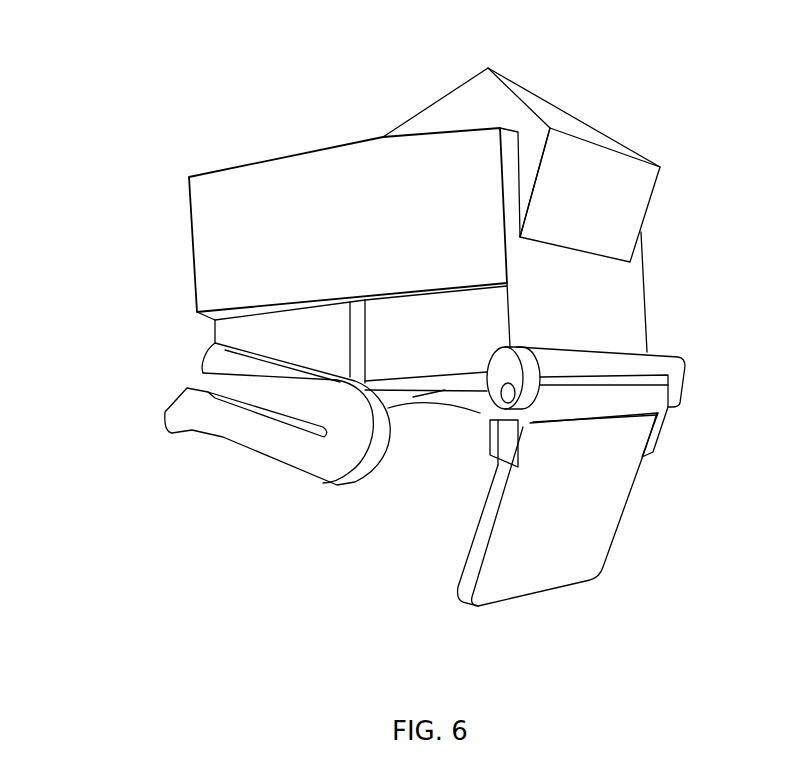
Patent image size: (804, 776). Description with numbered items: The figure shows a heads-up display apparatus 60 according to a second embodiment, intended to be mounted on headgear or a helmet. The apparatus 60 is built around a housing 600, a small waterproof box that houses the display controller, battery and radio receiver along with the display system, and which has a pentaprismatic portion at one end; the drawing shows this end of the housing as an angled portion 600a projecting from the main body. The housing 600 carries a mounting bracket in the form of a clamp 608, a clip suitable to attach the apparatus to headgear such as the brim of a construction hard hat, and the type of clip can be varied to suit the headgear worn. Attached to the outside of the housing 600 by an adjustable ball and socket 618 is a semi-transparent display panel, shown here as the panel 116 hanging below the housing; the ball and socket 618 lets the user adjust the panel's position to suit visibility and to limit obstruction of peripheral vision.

The heads-up display apparatus 60 is at (143, 147).
The housing 600 is at (277, 168).
The angled head portion 600a is at (593, 128).
The clamp 608 is at (193, 410).
The ball and socket 618 is at (503, 398).
The plate 116 is at (580, 535).